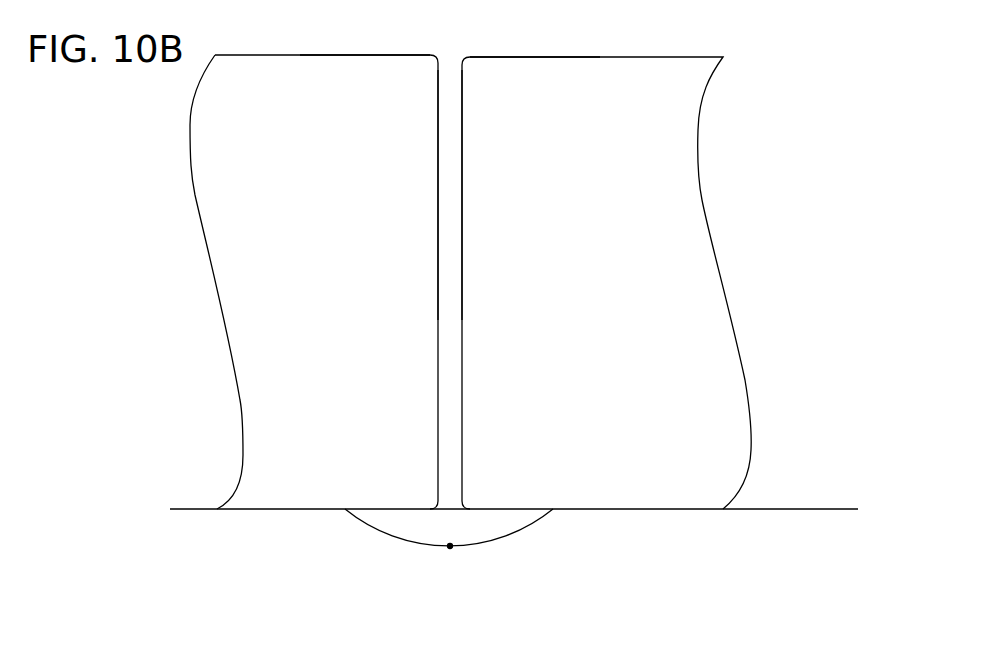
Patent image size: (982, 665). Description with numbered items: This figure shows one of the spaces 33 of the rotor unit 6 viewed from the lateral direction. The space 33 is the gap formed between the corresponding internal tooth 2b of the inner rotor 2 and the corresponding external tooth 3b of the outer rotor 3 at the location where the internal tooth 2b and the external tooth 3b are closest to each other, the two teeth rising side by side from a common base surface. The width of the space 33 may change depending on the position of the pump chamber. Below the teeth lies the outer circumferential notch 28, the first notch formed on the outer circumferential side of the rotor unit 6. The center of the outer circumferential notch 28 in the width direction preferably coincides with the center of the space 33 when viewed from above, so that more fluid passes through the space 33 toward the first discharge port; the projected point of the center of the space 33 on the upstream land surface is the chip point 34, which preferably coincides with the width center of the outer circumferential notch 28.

The inner rotor 2 is at (463, 57).
The outer rotor 3 is at (437, 56).
The internal tooth 2b is at (538, 73).
The external tooth 3b is at (377, 74).
The rotor unit 6 is at (425, 27).
The outer circumferential notch 28 is at (532, 530).
The space 33 is at (450, 260).
The chip point 34 is at (448, 547).